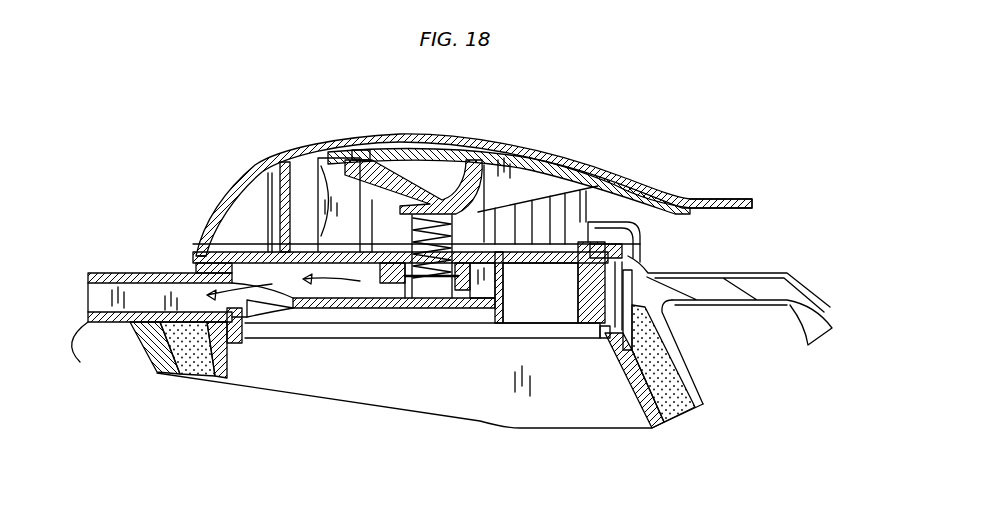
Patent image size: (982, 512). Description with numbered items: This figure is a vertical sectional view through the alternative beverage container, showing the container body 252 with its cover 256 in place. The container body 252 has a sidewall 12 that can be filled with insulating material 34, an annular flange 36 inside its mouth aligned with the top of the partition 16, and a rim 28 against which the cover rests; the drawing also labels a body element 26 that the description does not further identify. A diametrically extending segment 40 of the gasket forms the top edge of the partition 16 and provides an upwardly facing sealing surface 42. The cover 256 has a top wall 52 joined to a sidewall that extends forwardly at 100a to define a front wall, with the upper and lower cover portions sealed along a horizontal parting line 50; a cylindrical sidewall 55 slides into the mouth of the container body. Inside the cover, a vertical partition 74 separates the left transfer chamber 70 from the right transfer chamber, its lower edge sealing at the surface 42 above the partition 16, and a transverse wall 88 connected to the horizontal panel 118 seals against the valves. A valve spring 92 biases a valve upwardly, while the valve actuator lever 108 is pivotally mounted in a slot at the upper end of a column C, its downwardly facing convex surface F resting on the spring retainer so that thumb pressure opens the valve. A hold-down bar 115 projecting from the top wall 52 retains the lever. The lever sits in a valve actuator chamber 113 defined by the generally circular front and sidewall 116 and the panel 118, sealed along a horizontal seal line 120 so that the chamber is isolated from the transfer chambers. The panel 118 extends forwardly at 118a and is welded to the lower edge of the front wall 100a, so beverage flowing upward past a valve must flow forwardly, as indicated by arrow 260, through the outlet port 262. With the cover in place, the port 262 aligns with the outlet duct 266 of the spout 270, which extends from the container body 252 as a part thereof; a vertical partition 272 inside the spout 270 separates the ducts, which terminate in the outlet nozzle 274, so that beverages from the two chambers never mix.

The sidewall 12 is at (698, 388).
The partition 16 is at (538, 410).
The hood 26 is at (764, 274).
The rim 28 is at (203, 256).
The insulating material 34 is at (673, 406).
The annular flange 36 is at (607, 340).
The diametrically extending segment 40 is at (388, 336).
The upwardly facing sealing surface 42 is at (468, 318).
The parting line 50 is at (642, 233).
The top wall 52 is at (399, 139).
The cylindrical sidewall 55 is at (606, 296).
The left transfer chamber 70 is at (333, 291).
The vertical partition 74 is at (384, 286).
The transverse wall 88 is at (503, 313).
The valve spring 92 is at (382, 193).
The front wall 100a is at (216, 240).
The left valve actuator lever 108 is at (720, 195).
The valve actuator chamber 113 is at (368, 200).
The hold-down bar 115 is at (349, 160).
The front and sidewall 116 is at (300, 167).
The horizontal panel 118 is at (385, 270).
The forward panel extension 118a is at (243, 242).
The horizontal seal line 120 is at (524, 232).
The container body 252 is at (698, 378).
The cover 256 is at (545, 120).
The arrow 260 is at (236, 322).
The outlet port 262 is at (206, 272).
The outlet duct 266 is at (186, 292).
The spout 270 is at (110, 270).
The vertical partition 272 is at (133, 308).
The outlet nozzle 274 is at (80, 362).
The column C is at (350, 226).
The convex surface F is at (486, 210).